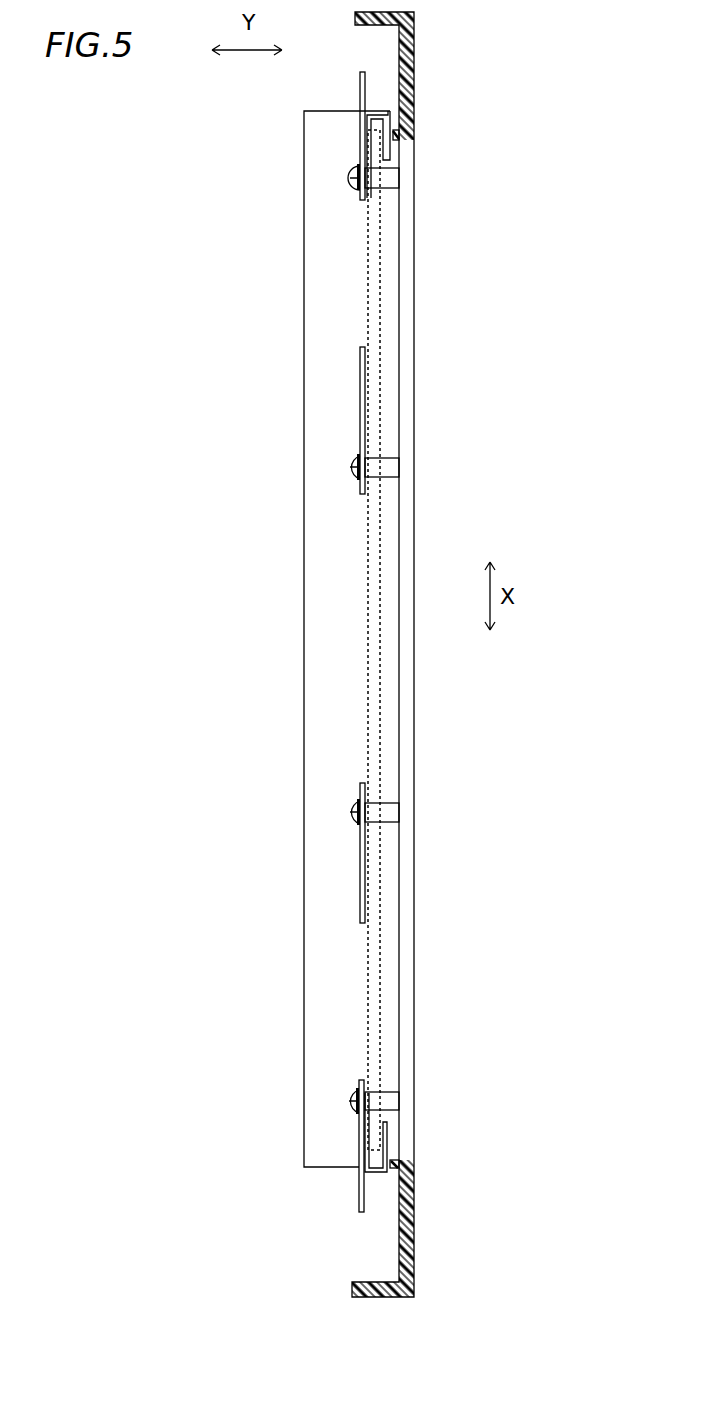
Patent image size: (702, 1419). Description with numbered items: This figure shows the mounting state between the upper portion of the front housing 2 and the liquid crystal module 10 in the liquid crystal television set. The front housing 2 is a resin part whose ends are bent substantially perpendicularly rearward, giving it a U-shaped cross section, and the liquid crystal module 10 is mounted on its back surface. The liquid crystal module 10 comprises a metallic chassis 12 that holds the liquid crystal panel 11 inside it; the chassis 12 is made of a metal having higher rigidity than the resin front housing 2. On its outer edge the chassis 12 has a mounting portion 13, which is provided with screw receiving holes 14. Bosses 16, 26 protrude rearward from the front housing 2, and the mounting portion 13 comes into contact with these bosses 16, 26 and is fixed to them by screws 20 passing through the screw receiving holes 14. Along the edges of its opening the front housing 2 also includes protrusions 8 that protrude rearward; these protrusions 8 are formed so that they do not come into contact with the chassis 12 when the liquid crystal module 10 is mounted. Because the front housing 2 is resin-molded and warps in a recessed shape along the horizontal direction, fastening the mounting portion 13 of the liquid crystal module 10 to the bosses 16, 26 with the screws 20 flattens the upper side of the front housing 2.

The front housing 2 is at (414, 48).
The protrusions 8 is at (401, 135).
The liquid crystal module 10 is at (271, 308).
The liquid crystal panel 11 is at (367, 602).
The chassis 12 is at (383, 1175).
The mounting portion 13 is at (361, 88).
The screw receiving holes 14 is at (363, 203).
The boss 16 is at (395, 178).
The screws 20 is at (349, 176).
The boss 26 is at (394, 467).